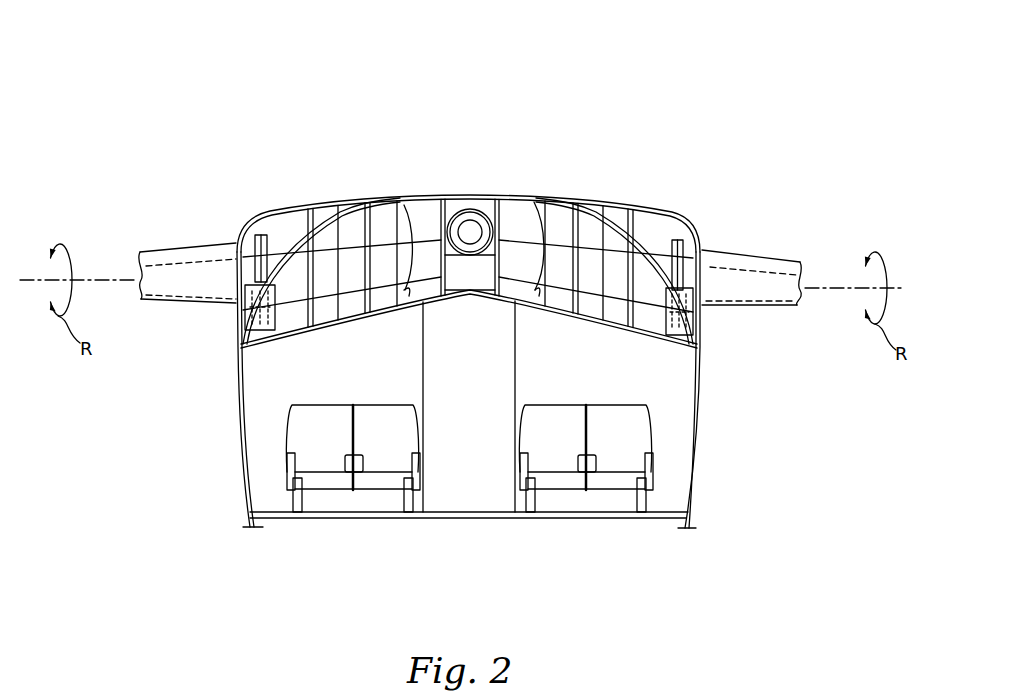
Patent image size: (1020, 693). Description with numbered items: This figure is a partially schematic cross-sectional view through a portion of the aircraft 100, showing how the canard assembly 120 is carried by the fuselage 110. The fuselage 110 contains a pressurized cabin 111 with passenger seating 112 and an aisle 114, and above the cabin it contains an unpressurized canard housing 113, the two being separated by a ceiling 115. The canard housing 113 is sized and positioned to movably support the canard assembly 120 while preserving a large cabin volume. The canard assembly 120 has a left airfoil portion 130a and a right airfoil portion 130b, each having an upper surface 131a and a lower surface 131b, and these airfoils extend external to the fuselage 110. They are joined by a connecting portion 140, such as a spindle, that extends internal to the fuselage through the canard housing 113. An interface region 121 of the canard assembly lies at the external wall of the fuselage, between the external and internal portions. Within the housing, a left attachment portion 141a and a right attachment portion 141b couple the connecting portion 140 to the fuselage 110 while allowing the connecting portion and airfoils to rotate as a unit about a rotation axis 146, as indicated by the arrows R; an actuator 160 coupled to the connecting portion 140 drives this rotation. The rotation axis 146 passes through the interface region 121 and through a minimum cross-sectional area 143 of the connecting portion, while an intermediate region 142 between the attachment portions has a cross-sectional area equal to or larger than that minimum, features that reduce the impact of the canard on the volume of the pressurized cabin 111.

The aircraft 100 is at (175, 98).
The fuselage 110 is at (238, 466).
The pressurized cabin 111 is at (266, 373).
The passenger seating 112 is at (341, 493).
The canard housing 113 is at (481, 196).
The aisle 114 is at (467, 491).
The ceiling 115 is at (300, 346).
The canard assembly 120 is at (333, 172).
The interface region 121 is at (239, 222).
The left airfoil portion 130a is at (740, 258).
The right airfoil portion 130b is at (186, 250).
The upper surface 131a is at (795, 292).
The lower surface 131b is at (753, 307).
The connecting portion 140 is at (587, 262).
The left attachment portion 141a is at (670, 238).
The right attachment portion 141b is at (273, 240).
The intermediate region 142 is at (420, 216).
The minimum cross-sectional area 143 is at (711, 316).
The rotation axis 146 is at (823, 300).
The actuator 160 is at (470, 228).